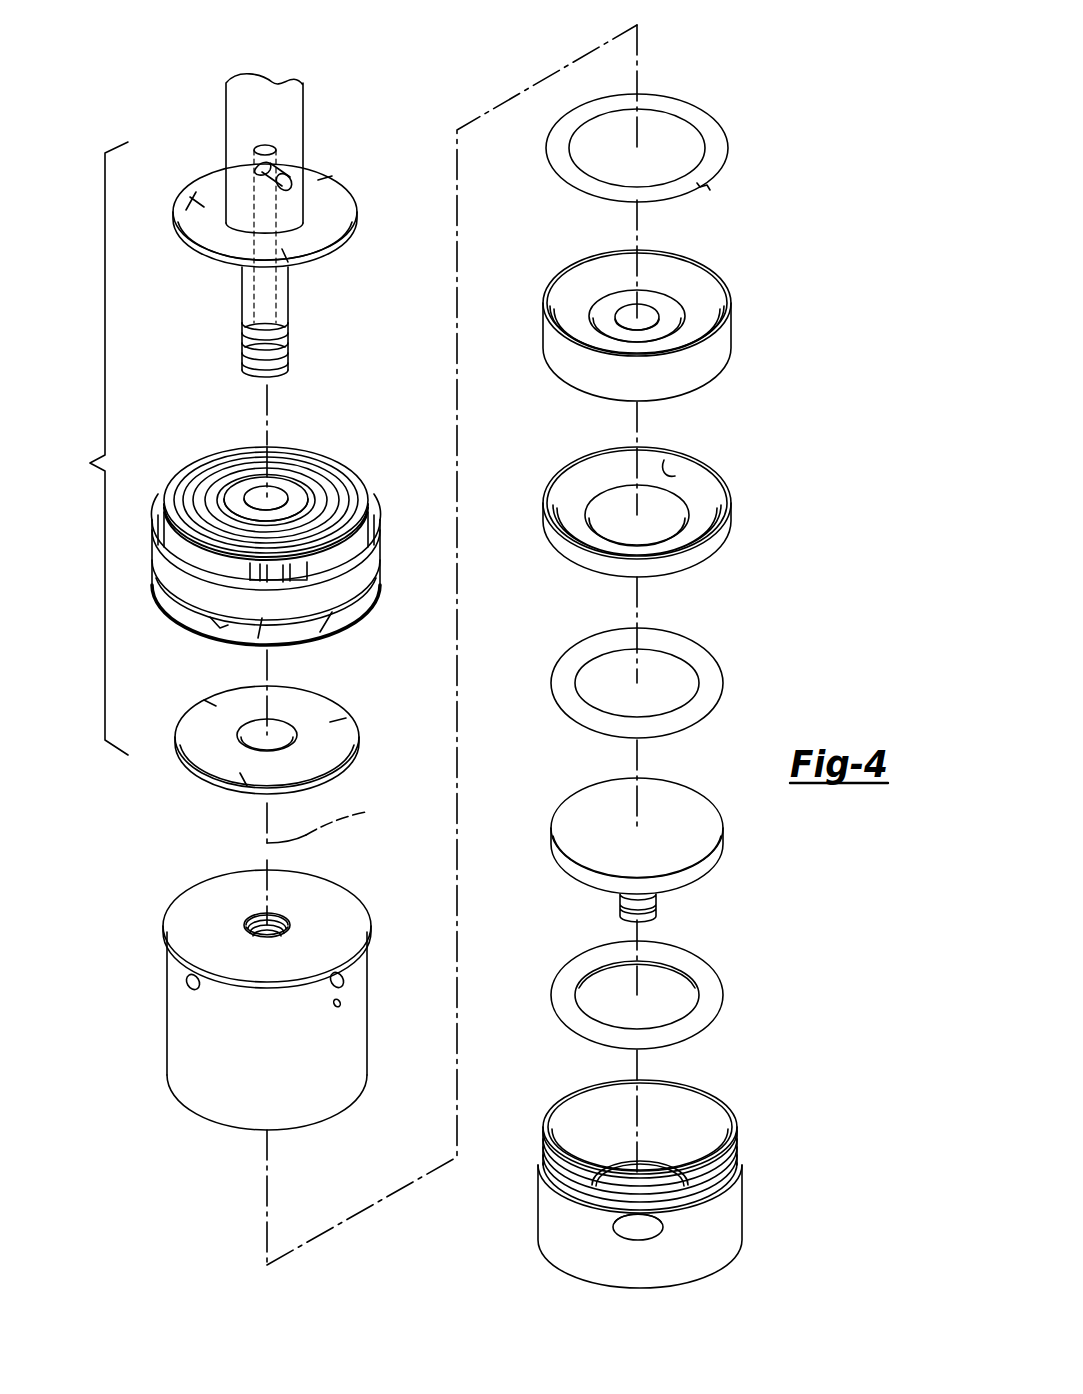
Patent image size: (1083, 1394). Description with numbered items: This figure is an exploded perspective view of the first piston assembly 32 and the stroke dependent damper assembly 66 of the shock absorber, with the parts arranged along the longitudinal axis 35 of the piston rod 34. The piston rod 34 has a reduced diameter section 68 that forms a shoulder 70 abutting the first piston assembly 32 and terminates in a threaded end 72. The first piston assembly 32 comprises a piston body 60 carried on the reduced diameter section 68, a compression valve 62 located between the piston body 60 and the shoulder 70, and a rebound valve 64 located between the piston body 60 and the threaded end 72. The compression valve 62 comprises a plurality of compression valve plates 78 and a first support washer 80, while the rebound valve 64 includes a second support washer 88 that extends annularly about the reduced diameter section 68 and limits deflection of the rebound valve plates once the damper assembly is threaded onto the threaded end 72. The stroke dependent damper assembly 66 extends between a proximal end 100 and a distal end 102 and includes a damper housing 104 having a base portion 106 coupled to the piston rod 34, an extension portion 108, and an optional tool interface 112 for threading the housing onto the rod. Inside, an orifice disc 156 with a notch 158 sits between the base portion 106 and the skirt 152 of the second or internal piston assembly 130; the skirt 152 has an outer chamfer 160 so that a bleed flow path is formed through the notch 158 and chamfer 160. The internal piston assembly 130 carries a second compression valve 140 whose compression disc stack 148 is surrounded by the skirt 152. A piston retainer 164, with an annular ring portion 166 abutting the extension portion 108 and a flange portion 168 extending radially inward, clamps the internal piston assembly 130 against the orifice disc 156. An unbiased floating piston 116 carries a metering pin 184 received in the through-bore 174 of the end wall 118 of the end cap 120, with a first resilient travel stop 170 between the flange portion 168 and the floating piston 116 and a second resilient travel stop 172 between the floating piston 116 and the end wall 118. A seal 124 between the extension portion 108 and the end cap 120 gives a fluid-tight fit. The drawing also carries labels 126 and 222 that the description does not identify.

The first piston assembly 32 is at (97, 448).
The piston rod 34 is at (292, 115).
The longitudinal axis 35 is at (330, 821).
The piston body 60 is at (226, 586).
The compression valve 62 is at (261, 533).
The rebound valve 64 is at (325, 637).
The stroke dependent damper assembly 66 is at (228, 1200).
The reduced diameter section 68 is at (285, 298).
The shoulder 70 is at (290, 233).
The threaded end 72 is at (243, 360).
The compression valve plates 78 is at (193, 505).
The first support washer 80 is at (197, 210).
The second support washer 88 is at (192, 735).
The proximal end 100 is at (241, 990).
The distal end 102 is at (657, 1169).
The damper housing 104 is at (241, 990).
The base portion 106 is at (203, 915).
The extension portion 108 is at (245, 1078).
The tool interface 112 is at (188, 983).
The floating piston 116 is at (700, 843).
The end wall 118 is at (617, 1180).
The end cap 120 is at (566, 1278).
The seal 124 is at (600, 1216).
The inner surface 126 is at (706, 1130).
The second piston assembly 130 is at (652, 319).
The second compression valve 140 is at (568, 303).
The compression disc stack 148 is at (577, 312).
The skirt 152 is at (690, 276).
The orifice disc 156 is at (700, 118).
The notch 158 is at (712, 192).
The outer chamfer 160 is at (592, 352).
The piston retainer 164 is at (687, 493).
The annular ring portion 166 is at (675, 475).
The flange portion 168 is at (583, 502).
The first resilient travel stop 170 is at (707, 676).
The second resilient travel stop 172 is at (704, 982).
The through-bore 174 is at (660, 1238).
The metering pin 184 is at (658, 908).
The inner thread 222 is at (548, 1130).